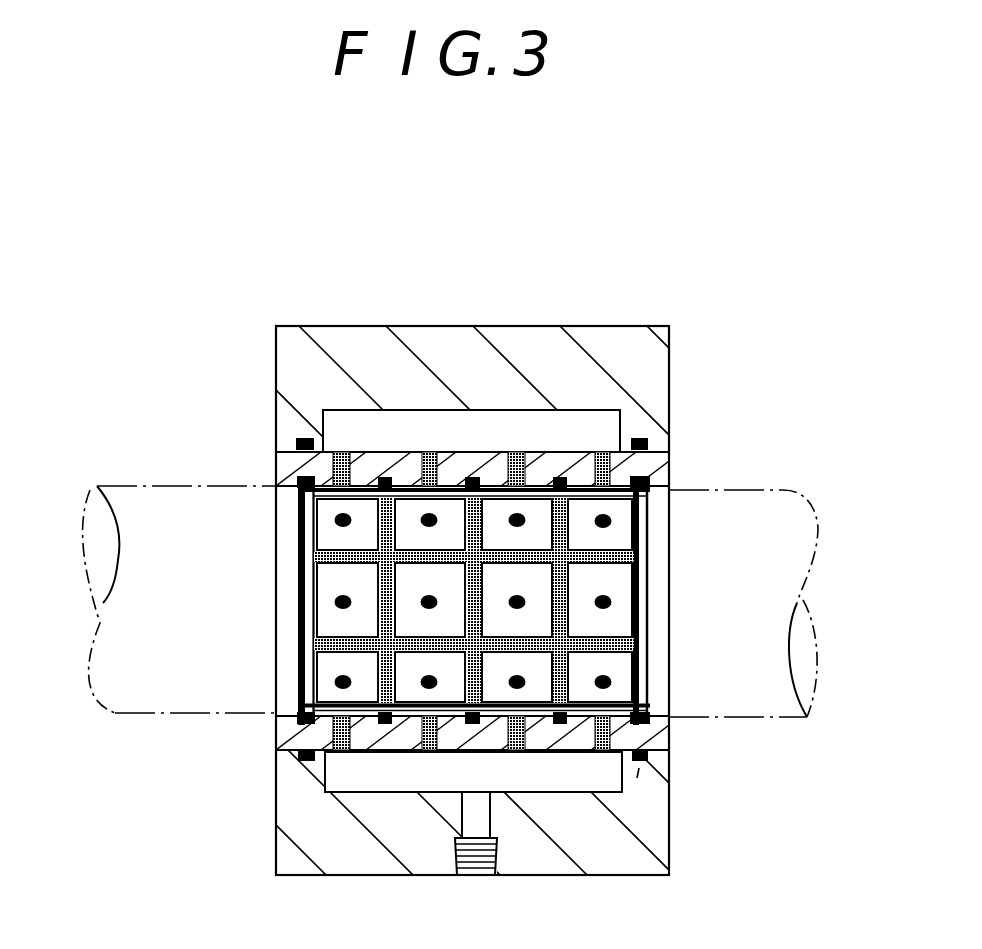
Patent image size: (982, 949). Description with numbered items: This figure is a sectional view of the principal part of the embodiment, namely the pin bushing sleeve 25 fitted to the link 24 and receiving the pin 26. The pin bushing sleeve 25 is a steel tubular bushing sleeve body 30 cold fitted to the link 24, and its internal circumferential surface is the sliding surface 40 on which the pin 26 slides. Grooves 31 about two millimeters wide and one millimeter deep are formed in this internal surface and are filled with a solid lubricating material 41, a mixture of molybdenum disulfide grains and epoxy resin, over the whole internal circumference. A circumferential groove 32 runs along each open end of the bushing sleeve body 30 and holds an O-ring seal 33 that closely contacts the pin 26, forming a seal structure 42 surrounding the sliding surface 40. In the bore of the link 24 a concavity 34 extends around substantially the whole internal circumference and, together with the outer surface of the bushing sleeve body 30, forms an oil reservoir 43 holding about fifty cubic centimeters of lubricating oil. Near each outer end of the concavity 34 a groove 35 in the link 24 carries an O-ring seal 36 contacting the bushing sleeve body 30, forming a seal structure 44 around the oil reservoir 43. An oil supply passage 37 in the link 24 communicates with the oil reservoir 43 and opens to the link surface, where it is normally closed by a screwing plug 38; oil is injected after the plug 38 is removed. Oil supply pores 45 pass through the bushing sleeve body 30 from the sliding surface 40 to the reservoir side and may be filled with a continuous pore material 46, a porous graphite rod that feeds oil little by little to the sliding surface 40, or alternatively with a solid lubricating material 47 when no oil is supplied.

The link 24 is at (276, 356).
The pin bushing sleeve 25 is at (252, 570).
The pin 26 is at (117, 713).
The bushing sleeve body 30 is at (276, 452).
The grooves 31 is at (414, 553).
The circumferential groove 32 is at (645, 597).
The O-ring seal 33 is at (647, 690).
The concavity 34 is at (527, 790).
The groove 35 is at (645, 750).
The O-ring seal 36 is at (637, 778).
The oil supply passage 37 is at (468, 813).
The screwing plug 38 is at (485, 866).
The sliding surface 40 is at (650, 523).
The solid lubricating material 41 is at (448, 554).
The seal structure 42 is at (687, 642).
The oil reservoir 43 is at (570, 768).
The seal structure 44 is at (488, 423).
The oil supply pores 45 is at (518, 517).
The continuous pore material 46 is at (603, 521).
The solid lubricating material 47 is at (471, 733).